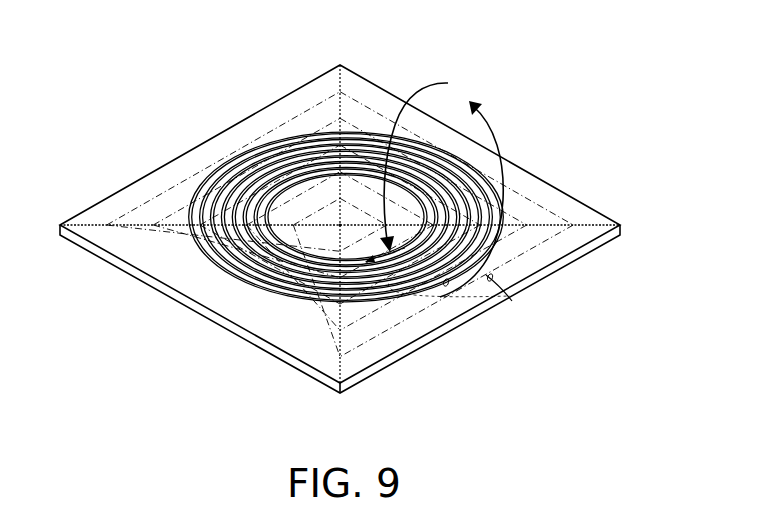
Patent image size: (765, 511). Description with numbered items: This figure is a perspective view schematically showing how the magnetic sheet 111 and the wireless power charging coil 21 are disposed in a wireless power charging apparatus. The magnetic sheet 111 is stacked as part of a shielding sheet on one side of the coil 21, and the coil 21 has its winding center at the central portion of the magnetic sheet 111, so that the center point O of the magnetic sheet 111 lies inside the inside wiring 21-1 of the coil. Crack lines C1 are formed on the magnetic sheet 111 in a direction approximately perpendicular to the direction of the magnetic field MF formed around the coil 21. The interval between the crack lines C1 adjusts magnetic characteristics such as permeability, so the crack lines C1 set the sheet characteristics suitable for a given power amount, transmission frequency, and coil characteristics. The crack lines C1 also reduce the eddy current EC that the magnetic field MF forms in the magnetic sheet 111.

The magnetic sheet 111 is at (236, 94).
The wireless power charging coil 21 is at (225, 163).
The inside wiring 21-1 is at (319, 175).
The magnetic field MF is at (498, 124).
The crack lines C1 is at (509, 252).
The eddy current EC is at (508, 302).
The center point O is at (333, 233).